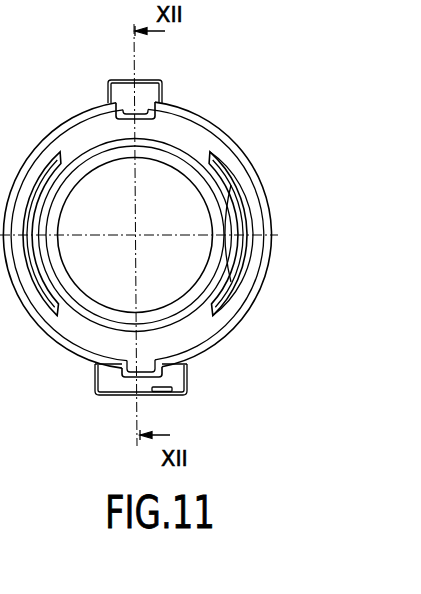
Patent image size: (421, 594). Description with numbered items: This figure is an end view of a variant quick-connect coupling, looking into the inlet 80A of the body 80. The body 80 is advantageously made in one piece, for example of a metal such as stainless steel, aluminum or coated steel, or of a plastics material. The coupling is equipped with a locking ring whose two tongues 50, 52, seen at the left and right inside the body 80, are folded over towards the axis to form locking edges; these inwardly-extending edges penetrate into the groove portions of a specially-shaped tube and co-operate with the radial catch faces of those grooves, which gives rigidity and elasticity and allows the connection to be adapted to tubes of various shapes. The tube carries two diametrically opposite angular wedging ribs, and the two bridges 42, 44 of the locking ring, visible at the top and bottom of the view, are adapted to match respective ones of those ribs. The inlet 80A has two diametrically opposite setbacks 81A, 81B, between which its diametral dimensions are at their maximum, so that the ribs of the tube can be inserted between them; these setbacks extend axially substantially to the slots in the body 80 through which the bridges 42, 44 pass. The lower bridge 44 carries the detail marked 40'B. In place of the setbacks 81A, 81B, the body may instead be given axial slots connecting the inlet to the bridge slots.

The bridge 42 is at (158, 80).
The bridge 44 is at (190, 371).
The tab retention lip 40'B is at (193, 406).
The tongue 50 is at (232, 215).
The tongue 52 is at (47, 220).
The body 80 is at (226, 130).
The inlet 80A is at (73, 146).
The setback 81A is at (151, 116).
The setback 81B is at (128, 357).